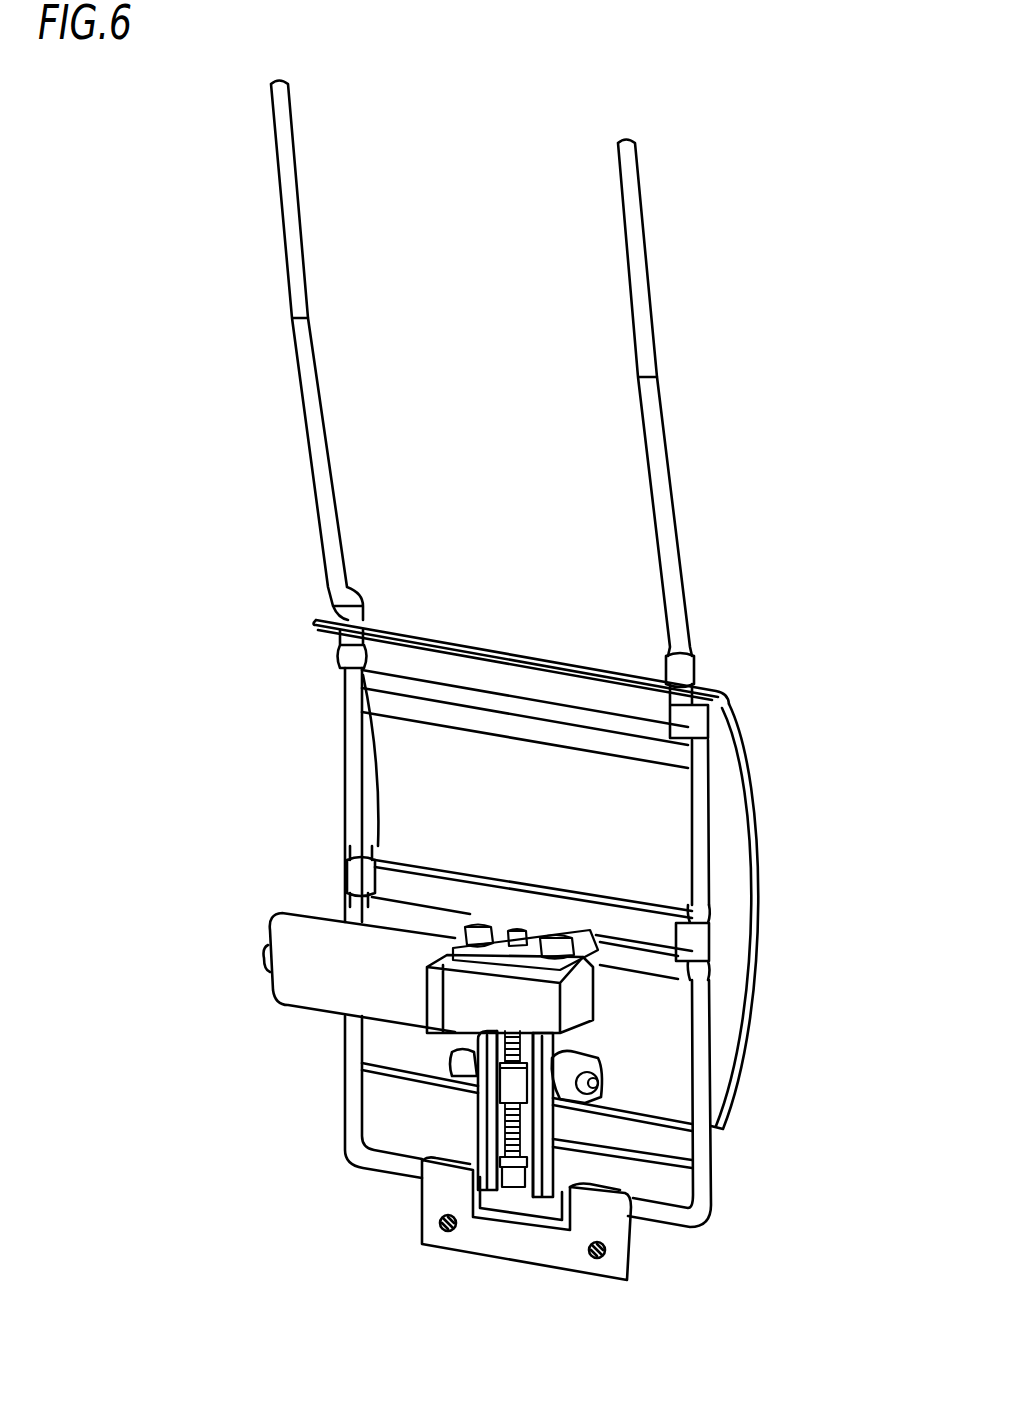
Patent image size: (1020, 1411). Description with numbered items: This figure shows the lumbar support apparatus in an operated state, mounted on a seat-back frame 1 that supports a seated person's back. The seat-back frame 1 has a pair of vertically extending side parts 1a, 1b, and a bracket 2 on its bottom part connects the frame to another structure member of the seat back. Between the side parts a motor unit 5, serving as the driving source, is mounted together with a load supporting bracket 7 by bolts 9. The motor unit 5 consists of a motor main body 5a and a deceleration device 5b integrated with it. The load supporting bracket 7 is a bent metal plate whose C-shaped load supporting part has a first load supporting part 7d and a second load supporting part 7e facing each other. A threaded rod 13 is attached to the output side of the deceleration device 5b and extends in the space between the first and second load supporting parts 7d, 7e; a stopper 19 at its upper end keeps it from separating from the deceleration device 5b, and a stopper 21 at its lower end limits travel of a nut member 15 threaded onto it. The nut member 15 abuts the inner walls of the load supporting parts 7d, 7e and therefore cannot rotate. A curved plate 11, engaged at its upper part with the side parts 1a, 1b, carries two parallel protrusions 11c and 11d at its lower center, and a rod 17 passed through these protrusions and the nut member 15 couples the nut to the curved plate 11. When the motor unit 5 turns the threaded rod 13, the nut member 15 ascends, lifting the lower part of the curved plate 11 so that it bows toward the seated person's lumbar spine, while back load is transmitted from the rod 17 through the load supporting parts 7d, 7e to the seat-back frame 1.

The seat-back frame 1 is at (491, 410).
The side part 1a is at (313, 432).
The side part 1b is at (658, 481).
The bracket 2 is at (610, 1241).
The motor unit 5 is at (402, 994).
The motor main body 5a is at (330, 982).
The deceleration device 5b is at (473, 1000).
The load supporting bracket 7 is at (537, 1124).
The first load supporting part 7d is at (537, 1113).
The second load supporting part 7e is at (500, 1100).
The bolts 9 is at (458, 921).
The curved plate 11 is at (553, 923).
The protrusion 11c is at (467, 1067).
The protrusion 11d is at (596, 1066).
The threaded rod 13 is at (517, 1178).
The nut member 15 is at (510, 1077).
The rod 17 is at (603, 1085).
The stopper 19 is at (497, 937).
The stopper 21 is at (515, 1194).